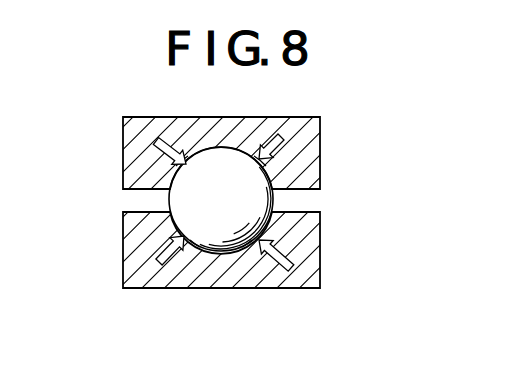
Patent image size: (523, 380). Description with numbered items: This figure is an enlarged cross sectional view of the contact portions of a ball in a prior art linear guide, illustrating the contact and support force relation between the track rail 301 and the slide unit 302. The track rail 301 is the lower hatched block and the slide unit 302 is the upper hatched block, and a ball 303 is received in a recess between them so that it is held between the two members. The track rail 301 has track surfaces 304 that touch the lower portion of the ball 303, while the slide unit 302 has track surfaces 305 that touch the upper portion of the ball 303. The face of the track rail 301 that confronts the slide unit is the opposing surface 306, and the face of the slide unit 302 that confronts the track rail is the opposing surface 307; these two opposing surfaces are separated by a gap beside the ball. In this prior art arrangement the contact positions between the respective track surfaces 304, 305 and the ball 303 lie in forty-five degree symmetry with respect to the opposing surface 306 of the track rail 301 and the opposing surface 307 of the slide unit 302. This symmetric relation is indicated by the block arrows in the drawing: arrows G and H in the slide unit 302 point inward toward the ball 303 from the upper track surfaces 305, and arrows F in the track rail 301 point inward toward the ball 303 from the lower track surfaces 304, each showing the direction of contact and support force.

The track rail 301 is at (312, 251).
The slide unit 302 is at (308, 128).
The ball 303 is at (170, 202).
The track surface 304 is at (196, 252).
The track surface 305 is at (183, 162).
The opposing surface of the track rail 306 is at (319, 212).
The opposing surface of the slide unit 307 is at (320, 189).
The arrow indicating contact position and support force G is at (158, 141).
The arrow indicating contact position and support force H is at (281, 137).
The arrow indicating contact position and support force F is at (162, 258).